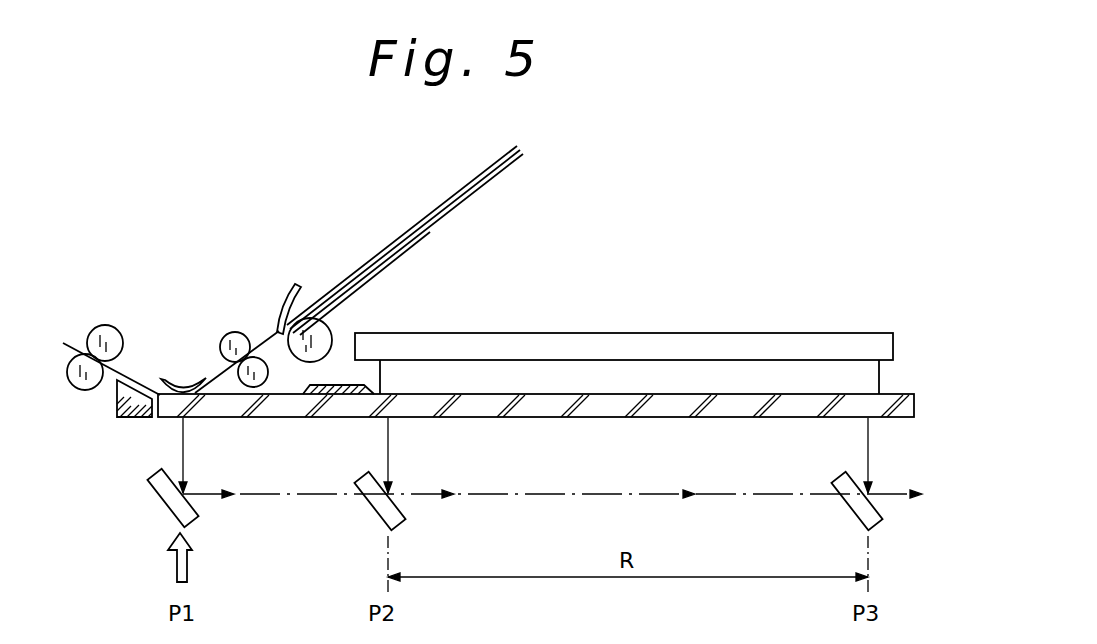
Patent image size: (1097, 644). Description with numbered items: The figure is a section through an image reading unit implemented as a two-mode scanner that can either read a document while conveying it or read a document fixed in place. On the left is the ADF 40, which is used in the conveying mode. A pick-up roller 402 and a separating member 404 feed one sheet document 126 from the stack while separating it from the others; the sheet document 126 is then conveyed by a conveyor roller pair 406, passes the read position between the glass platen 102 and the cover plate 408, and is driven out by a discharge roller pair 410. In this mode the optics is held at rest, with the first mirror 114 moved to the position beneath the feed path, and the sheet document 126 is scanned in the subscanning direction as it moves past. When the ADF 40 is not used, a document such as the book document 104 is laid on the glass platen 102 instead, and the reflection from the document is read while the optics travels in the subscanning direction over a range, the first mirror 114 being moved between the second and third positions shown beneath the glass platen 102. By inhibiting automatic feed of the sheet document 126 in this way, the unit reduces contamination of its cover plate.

The ADF 40 is at (310, 213).
The sheet document 126 is at (395, 234).
The separating member 404 is at (284, 314).
The pick-up roller 402 is at (330, 331).
The conveyor roller pair 406 is at (233, 332).
The discharge roller pair 410 is at (108, 326).
The cover plate 408 is at (173, 377).
The glass platen 102 is at (652, 405).
The book document 104 is at (570, 333).
The first mirror 114 is at (178, 505).